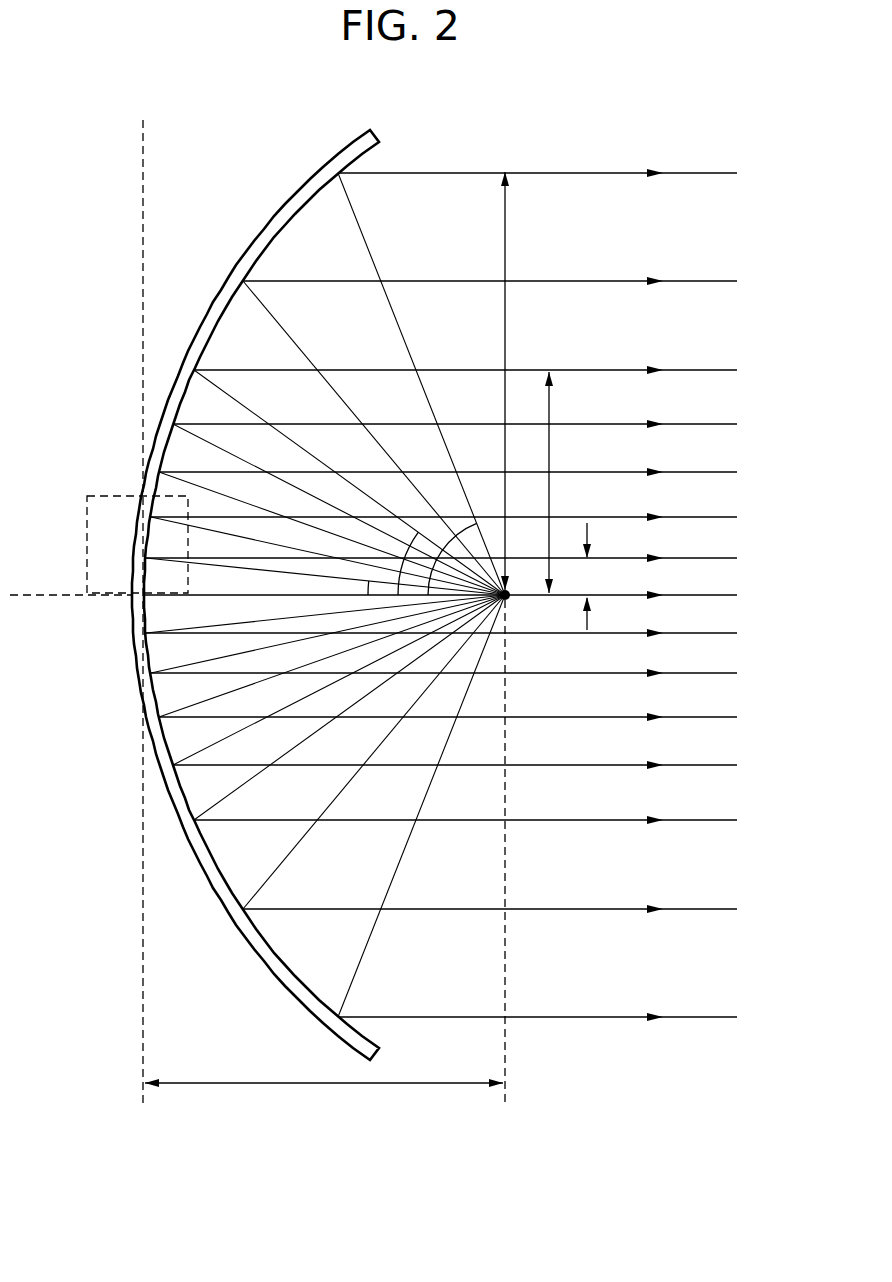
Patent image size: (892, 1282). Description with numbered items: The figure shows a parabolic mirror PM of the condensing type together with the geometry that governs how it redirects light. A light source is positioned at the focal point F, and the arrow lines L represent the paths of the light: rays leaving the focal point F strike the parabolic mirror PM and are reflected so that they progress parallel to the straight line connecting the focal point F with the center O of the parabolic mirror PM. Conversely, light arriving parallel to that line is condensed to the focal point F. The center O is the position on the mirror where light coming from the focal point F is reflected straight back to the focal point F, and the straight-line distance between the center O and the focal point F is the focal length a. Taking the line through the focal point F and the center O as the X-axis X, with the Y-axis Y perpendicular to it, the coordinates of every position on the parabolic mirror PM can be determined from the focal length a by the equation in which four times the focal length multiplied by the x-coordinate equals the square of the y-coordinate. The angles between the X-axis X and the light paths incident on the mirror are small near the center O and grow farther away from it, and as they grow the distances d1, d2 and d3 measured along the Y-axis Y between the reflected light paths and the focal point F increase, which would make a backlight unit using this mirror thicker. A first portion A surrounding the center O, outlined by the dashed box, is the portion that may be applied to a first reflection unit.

The parabolic mirror PM is at (375, 1052).
The first portion A is at (110, 495).
The focal point F is at (335, 640).
The light L is at (451, 588).
The center O is at (118, 610).
The X-axis X is at (384, 594).
The Y-axis Y is at (142, 614).
The focal length a is at (324, 1095).
The distance d1 is at (600, 576).
The distance d2 is at (563, 482).
The distance d3 is at (520, 381).